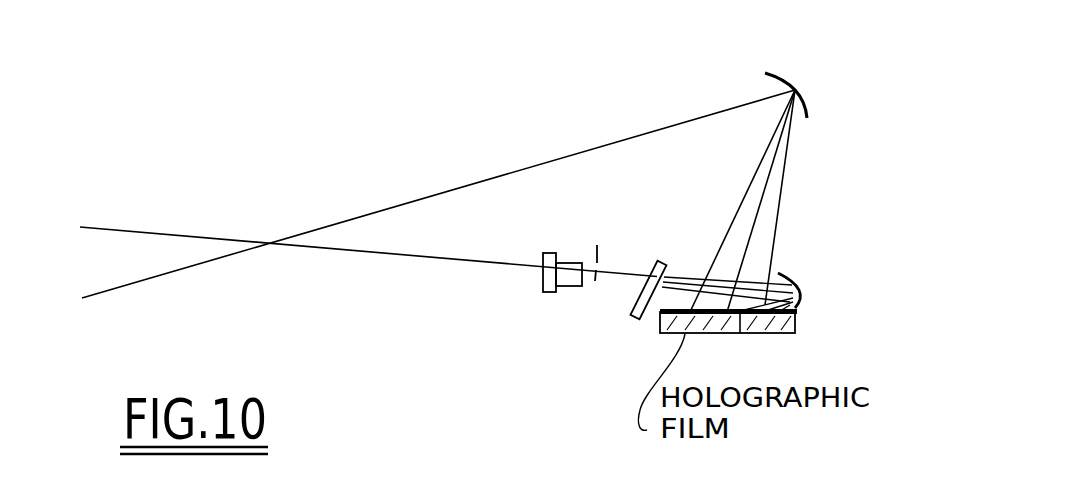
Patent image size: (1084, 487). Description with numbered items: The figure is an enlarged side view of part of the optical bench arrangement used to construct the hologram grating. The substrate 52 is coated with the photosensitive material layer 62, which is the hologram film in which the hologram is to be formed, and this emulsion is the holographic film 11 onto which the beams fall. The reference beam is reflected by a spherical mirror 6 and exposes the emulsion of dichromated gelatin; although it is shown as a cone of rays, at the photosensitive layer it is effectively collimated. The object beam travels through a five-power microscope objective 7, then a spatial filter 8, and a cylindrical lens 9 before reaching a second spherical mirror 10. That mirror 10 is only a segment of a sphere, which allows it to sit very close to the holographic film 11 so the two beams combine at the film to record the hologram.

The spherical mirror 6 is at (803, 87).
The 5-power microscope objective 7 is at (543, 293).
The spatial filter 8 is at (594, 293).
The cylindrical lens 9 is at (637, 302).
The spherical mirror 10 is at (781, 277).
The holographic film 11 is at (742, 333).
The substrate 52 is at (777, 334).
The photosensitive material layer 62 is at (797, 318).